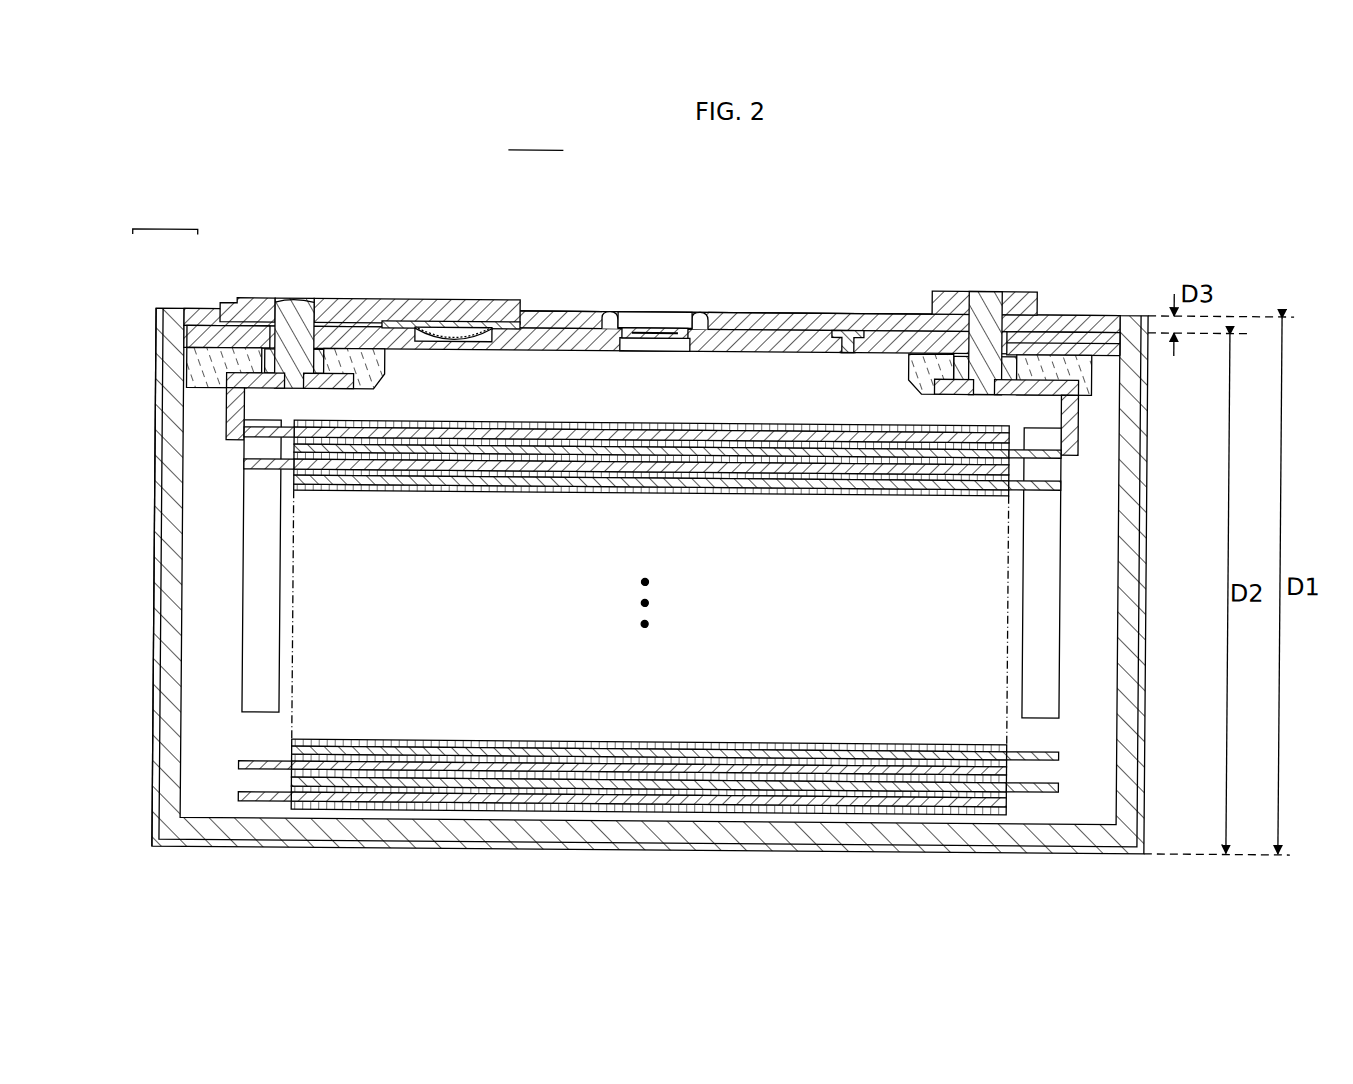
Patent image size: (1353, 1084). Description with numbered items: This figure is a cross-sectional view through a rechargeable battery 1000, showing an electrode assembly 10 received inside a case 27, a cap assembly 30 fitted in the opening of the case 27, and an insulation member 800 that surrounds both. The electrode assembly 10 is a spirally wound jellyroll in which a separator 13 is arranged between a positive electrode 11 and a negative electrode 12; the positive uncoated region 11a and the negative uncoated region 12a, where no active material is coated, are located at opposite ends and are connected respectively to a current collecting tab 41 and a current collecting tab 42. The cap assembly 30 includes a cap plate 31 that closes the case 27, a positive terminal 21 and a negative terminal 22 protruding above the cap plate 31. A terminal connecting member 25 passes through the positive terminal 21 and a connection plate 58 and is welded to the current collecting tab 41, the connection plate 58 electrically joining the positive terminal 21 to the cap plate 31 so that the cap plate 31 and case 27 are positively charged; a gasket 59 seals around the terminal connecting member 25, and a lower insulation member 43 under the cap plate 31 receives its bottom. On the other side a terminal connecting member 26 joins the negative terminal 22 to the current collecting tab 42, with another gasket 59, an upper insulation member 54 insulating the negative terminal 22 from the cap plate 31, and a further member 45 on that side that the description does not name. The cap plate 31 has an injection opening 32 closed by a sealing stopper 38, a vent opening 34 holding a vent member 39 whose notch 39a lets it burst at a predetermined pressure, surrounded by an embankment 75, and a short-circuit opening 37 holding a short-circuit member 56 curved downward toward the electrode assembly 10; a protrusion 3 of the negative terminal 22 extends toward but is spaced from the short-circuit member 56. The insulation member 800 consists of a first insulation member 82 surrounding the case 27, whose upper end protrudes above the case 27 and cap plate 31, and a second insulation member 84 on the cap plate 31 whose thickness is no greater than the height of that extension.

The rechargeable battery 1000 is at (538, 138).
The electrode assembly 10 is at (648, 667).
The positive electrode 11 is at (900, 787).
The positive uncoated region 11a is at (1040, 787).
The negative electrode 12 is at (390, 772).
The negative uncoated region 12a is at (258, 804).
The separator 13 is at (656, 812).
The positive terminal 21 is at (1018, 289).
The negative terminal 22 is at (240, 301).
The terminal connecting member 25 is at (983, 289).
The terminal connecting member 26 is at (292, 301).
The case 27 is at (1147, 645).
The cap assembly 30 is at (788, 311).
The cap plate 31 is at (1092, 340).
The injection opening 32 is at (846, 352).
The vent opening 34 is at (652, 352).
The short-circuit opening 37 is at (420, 333).
The sealing stopper 38 is at (848, 330).
The vent member 39 is at (666, 328).
The notch 39a is at (655, 331).
The current collecting tab 41 is at (1040, 535).
The current collecting tab 42 is at (262, 522).
The lower insulation member 43 is at (1095, 372).
The negative insulating member 45 is at (200, 365).
The upper insulation member 54 is at (350, 301).
The short-circuit member 56 is at (458, 336).
The connection plate 58 is at (1045, 329).
The gasket 59 is at (284, 301).
The embankment 75 is at (606, 315).
The first insulation member 82 is at (158, 320).
The second insulation member 84 is at (560, 318).
The insulation member 800 is at (165, 217).
The protrusion 3 is at (480, 323).